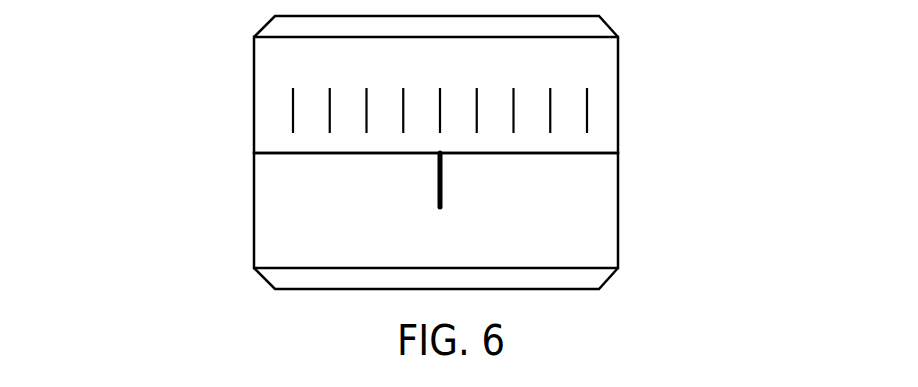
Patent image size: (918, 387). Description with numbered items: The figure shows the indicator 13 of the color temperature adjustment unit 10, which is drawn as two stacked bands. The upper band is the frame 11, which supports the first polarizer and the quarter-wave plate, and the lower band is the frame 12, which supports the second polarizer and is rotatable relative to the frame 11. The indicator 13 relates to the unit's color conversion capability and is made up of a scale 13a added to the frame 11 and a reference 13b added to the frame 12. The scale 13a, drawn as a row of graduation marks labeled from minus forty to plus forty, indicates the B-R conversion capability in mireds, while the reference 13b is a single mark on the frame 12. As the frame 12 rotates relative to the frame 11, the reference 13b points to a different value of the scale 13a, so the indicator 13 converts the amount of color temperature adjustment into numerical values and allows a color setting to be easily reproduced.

The color temperature adjustment unit 10 is at (818, 36).
The frame 11 is at (422, 84).
The frame 12 is at (419, 221).
The indicator 13 is at (105, 44).
The scale 13a is at (238, 98).
The reference 13b is at (240, 210).